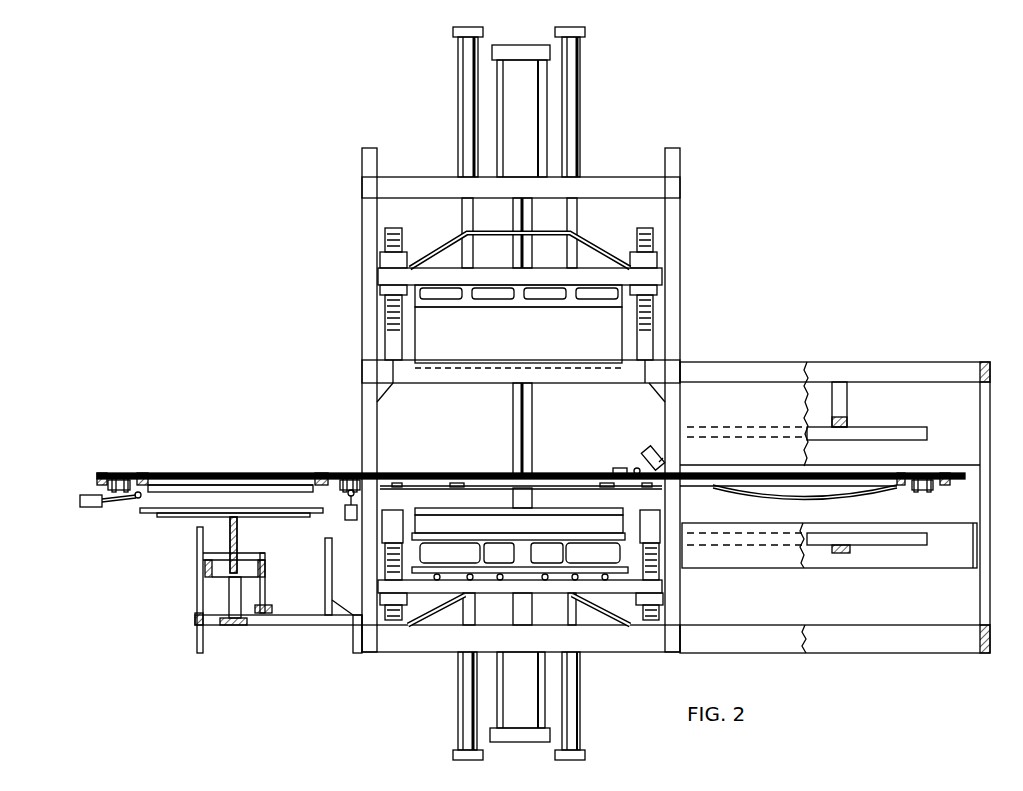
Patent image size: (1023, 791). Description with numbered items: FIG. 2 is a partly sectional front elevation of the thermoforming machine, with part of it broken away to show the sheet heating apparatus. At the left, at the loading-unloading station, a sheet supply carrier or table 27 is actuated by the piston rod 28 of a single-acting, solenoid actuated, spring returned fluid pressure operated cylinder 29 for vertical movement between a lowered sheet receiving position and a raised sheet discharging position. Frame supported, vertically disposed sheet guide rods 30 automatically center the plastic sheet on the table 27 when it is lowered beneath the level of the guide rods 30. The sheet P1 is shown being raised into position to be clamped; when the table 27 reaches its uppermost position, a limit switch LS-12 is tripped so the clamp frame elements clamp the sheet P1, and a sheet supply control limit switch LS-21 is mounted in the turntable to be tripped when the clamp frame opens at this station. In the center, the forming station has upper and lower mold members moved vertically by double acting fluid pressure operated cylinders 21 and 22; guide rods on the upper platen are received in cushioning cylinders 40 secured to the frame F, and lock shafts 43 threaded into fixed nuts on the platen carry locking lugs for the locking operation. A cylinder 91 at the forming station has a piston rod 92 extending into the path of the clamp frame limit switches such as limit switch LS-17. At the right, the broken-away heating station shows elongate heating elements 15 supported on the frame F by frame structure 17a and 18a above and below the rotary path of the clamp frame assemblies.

The frame F is at (611, 183).
The upper mold lowering cylinder 21 is at (534, 93).
The lower mold raising cylinder 22 is at (510, 695).
The cushioning cylinders 40 is at (460, 140).
The lock shafts 43 is at (653, 245).
The heating elements 15 is at (887, 430).
The frame structure 17a is at (842, 400).
The frame structure 18a is at (841, 553).
The cylinder 91 is at (661, 463).
The piston rod 92 is at (648, 448).
The clamp frame limit switch LS-17 is at (613, 467).
The limit switch LS-12 is at (88, 507).
The sheet supply control limit switch LS-21 is at (344, 519).
The sheet P1 is at (208, 507).
The table 27 is at (163, 517).
The piston rod 28 is at (232, 539).
The cylinder 29 is at (242, 600).
The sheet guide rods 30 is at (200, 583).